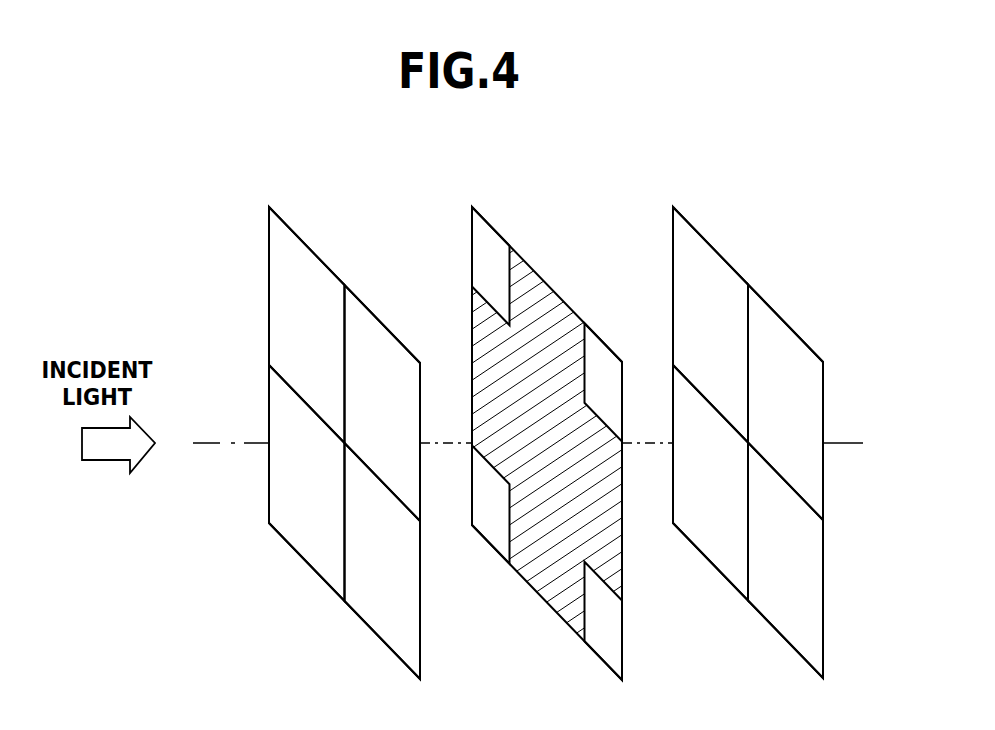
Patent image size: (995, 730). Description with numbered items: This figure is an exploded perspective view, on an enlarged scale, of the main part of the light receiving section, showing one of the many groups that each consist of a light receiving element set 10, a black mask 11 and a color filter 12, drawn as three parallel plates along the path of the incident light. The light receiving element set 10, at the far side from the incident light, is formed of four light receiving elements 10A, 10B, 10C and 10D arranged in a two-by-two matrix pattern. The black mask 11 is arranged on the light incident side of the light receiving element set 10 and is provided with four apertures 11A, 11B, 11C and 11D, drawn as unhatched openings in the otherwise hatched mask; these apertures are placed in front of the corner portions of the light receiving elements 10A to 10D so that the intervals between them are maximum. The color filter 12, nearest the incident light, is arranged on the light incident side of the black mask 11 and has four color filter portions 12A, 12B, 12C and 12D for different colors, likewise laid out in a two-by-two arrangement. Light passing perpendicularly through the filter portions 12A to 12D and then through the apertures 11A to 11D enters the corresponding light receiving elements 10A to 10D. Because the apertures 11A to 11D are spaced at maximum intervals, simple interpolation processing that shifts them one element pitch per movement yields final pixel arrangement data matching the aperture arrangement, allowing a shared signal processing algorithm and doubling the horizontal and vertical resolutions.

The light receiving element set 10 is at (762, 297).
The light receiving element 10A is at (705, 257).
The light receiving element 10B is at (812, 362).
The light receiving element 10C is at (720, 565).
The light receiving element 10D is at (817, 627).
The black mask 11 is at (560, 297).
The aperture 11A is at (492, 247).
The aperture 11B is at (608, 365).
The aperture 11C is at (489, 530).
The aperture 11D is at (605, 650).
The color filter 12 is at (331, 266).
The color filter portion 12A is at (277, 293).
The color filter portion 12B is at (398, 353).
The color filter portion 12C is at (290, 535).
The color filter portion 12D is at (376, 620).